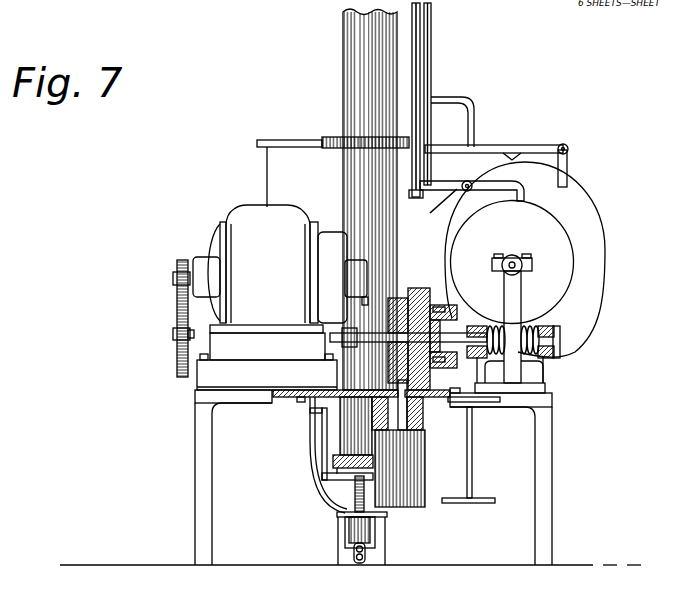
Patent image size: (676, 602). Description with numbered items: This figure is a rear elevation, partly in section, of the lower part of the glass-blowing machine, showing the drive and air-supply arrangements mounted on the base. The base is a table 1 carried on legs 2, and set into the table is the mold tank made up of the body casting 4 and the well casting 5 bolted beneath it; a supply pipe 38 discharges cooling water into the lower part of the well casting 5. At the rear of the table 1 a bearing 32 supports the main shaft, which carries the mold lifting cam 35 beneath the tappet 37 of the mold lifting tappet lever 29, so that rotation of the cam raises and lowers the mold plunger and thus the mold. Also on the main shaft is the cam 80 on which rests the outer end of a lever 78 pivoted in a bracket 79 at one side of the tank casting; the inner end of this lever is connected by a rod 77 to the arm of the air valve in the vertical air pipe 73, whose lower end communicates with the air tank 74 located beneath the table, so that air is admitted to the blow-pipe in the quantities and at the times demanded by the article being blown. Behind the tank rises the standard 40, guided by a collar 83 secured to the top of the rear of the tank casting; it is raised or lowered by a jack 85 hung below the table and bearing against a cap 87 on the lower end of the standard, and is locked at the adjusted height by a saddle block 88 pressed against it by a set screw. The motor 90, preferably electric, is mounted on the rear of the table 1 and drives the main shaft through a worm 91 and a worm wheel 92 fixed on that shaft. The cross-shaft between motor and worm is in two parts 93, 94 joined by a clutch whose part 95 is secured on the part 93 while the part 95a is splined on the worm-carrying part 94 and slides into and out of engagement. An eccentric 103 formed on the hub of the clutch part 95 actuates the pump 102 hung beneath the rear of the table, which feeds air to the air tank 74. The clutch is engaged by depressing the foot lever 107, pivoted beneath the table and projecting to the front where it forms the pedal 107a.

The table 1 is at (202, 393).
The legs 2 is at (202, 422).
The body casting 4 is at (267, 165).
The well casting 5 is at (347, 527).
The mold lifting tappet lever 29 is at (498, 148).
The bearing 32 is at (522, 278).
The mold lifting cam 35 is at (525, 259).
The tappet 37 is at (513, 158).
The supply pipe 38 is at (353, 548).
The standard 40 is at (345, 55).
The vertical air pipe 73 is at (418, 35).
The air tank 74 is at (348, 494).
The rod 77 is at (431, 55).
The lever 78 is at (443, 210).
The bracket 79 is at (443, 182).
The cam 80 is at (484, 198).
The collar 83 is at (326, 137).
The jack 85 is at (340, 509).
The cap 87 is at (335, 463).
The saddle block 88 is at (322, 445).
The motor 90 is at (260, 297).
The worm 91 is at (548, 325).
The worm wheel 92 is at (512, 262).
The cross-shaft part 93 is at (337, 364).
The cross-shaft part 94 is at (468, 326).
The clutch part 95 is at (388, 320).
The clutch part 95a is at (457, 395).
The pump 102 is at (412, 467).
The eccentric 103 is at (390, 362).
The foot lever 107 is at (472, 423).
The pedal 107a is at (478, 498).